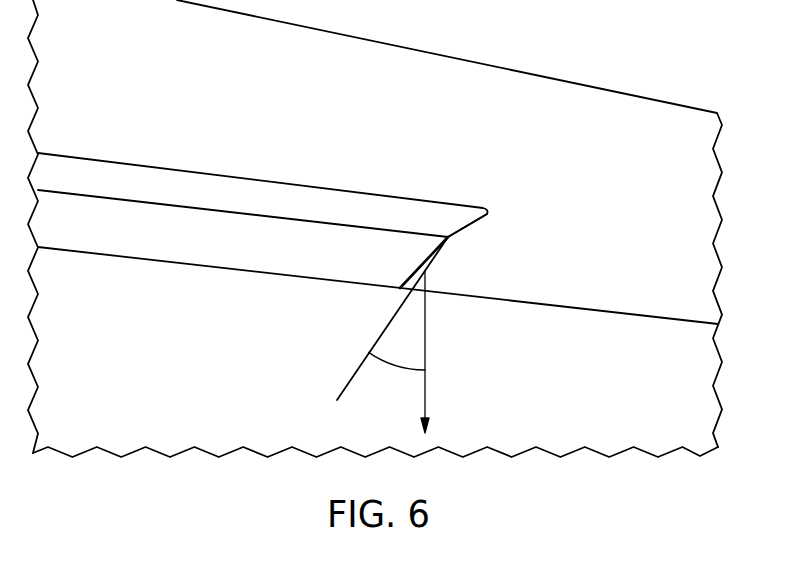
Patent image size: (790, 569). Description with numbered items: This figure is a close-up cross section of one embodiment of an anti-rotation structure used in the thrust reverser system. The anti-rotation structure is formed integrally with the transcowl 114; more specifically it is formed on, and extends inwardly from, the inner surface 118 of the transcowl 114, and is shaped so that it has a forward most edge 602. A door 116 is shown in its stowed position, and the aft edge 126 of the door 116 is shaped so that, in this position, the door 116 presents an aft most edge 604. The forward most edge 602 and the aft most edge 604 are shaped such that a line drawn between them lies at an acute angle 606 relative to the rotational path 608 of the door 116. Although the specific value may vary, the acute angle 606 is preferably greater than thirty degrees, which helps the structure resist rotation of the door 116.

The transcowl 114 is at (278, 84).
The door 116 is at (183, 244).
The inner surface 118 is at (312, 186).
The aft edge 126 is at (420, 268).
The forward most edge 602 is at (400, 294).
The aft most edge 604 is at (459, 234).
The acute angle 606 is at (392, 368).
The rotational path 608 is at (427, 398).